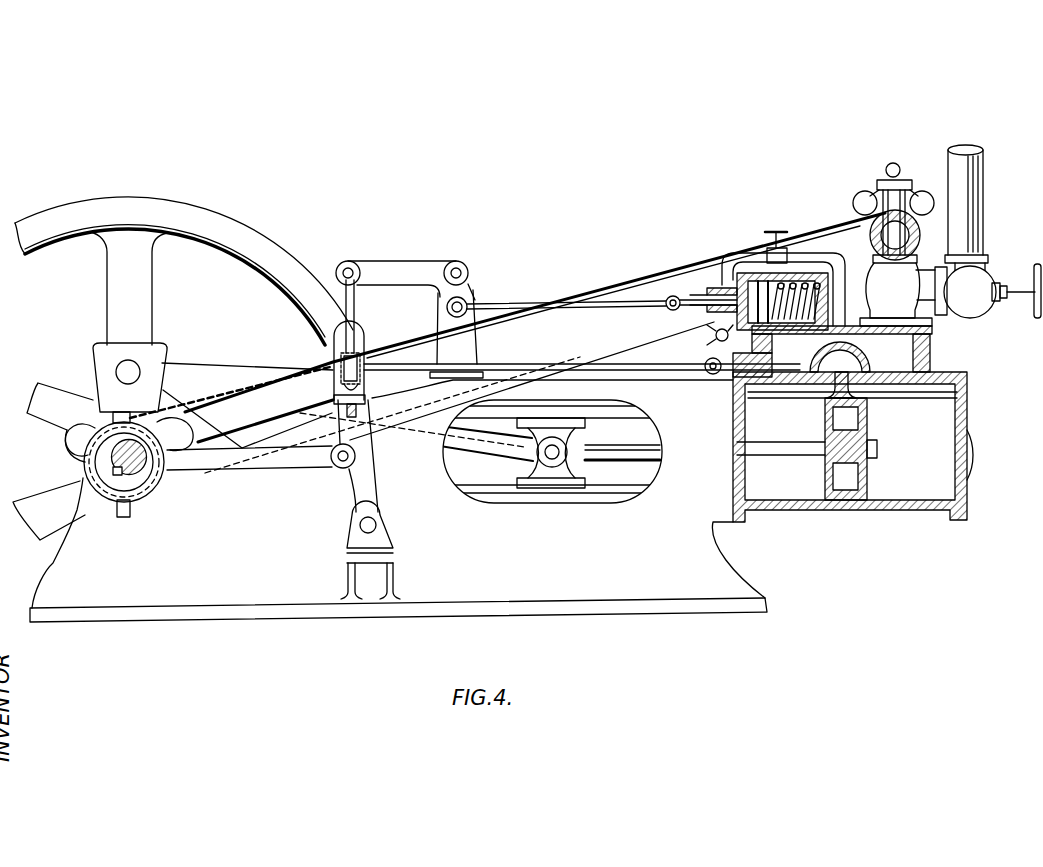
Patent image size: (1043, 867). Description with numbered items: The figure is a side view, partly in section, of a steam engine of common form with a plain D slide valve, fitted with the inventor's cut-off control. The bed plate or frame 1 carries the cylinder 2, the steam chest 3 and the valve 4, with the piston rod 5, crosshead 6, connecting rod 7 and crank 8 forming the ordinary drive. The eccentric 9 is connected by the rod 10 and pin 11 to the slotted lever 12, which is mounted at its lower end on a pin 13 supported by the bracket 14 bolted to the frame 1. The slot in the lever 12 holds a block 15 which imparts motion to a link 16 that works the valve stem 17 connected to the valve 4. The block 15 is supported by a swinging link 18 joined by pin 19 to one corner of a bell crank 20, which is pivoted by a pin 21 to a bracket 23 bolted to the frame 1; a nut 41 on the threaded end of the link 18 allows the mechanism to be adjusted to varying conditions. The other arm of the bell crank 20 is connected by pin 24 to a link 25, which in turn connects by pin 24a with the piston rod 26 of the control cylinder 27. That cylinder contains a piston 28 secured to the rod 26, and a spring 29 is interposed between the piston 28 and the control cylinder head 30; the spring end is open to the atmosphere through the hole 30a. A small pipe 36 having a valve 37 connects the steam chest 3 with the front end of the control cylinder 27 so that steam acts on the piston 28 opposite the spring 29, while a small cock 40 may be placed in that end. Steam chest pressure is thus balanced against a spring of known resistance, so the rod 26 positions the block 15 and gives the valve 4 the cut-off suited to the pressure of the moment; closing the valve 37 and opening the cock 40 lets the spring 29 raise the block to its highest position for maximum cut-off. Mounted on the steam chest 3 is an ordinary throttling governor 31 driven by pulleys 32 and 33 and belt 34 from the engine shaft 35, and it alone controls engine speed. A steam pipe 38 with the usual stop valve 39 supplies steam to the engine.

The bed plate or frame 1 is at (250, 612).
The cylinder 2 is at (892, 505).
The steam chest 3 is at (922, 355).
The valve 4 is at (852, 346).
The piston rod 5 is at (642, 460).
The crosshead 6 is at (554, 486).
The connecting rod 7 is at (182, 366).
The crank 8 is at (112, 372).
The eccentric 9 is at (137, 486).
The rod 10 is at (292, 470).
The pin 11 is at (338, 468).
The slotted lever 12 is at (372, 493).
The pin 13 is at (374, 526).
The bracket 14 is at (355, 537).
The block 15 is at (338, 372).
The link 16 is at (544, 374).
The valve stem 17 is at (728, 375).
The swinging link 18 is at (352, 300).
The pin 19 is at (344, 266).
The bell crank 20 is at (428, 259).
The pin 21 is at (468, 270).
The bracket 23 is at (474, 345).
The pin 24 is at (446, 310).
The pin 24a is at (672, 312).
The link 25 is at (600, 306).
The piston rod 26 is at (698, 295).
The control cylinder 27 is at (749, 278).
The piston 28 is at (762, 279).
The spring 29 is at (800, 282).
The control cylinder head 30 is at (830, 294).
The hole 30a is at (832, 313).
The throttling governor 31 is at (900, 180).
The pulley 32 is at (920, 242).
The pulley 33 is at (172, 472).
The belt 34 is at (535, 312).
The engine shaft 35 is at (127, 470).
The small pipe 36 is at (838, 270).
The valve 37 is at (780, 246).
The steam pipe 38 is at (988, 180).
The stop valve 39 is at (986, 312).
The cock 40 is at (716, 338).
The nut 41 is at (334, 400).